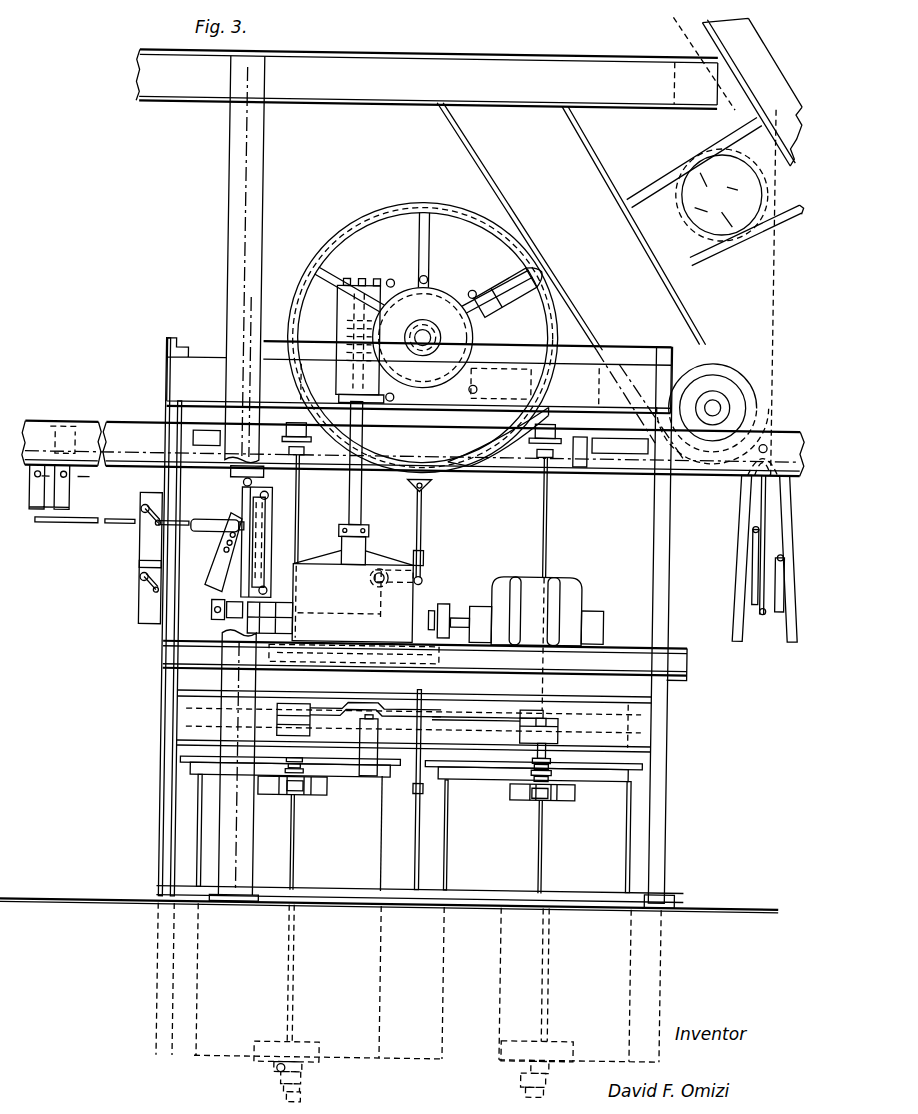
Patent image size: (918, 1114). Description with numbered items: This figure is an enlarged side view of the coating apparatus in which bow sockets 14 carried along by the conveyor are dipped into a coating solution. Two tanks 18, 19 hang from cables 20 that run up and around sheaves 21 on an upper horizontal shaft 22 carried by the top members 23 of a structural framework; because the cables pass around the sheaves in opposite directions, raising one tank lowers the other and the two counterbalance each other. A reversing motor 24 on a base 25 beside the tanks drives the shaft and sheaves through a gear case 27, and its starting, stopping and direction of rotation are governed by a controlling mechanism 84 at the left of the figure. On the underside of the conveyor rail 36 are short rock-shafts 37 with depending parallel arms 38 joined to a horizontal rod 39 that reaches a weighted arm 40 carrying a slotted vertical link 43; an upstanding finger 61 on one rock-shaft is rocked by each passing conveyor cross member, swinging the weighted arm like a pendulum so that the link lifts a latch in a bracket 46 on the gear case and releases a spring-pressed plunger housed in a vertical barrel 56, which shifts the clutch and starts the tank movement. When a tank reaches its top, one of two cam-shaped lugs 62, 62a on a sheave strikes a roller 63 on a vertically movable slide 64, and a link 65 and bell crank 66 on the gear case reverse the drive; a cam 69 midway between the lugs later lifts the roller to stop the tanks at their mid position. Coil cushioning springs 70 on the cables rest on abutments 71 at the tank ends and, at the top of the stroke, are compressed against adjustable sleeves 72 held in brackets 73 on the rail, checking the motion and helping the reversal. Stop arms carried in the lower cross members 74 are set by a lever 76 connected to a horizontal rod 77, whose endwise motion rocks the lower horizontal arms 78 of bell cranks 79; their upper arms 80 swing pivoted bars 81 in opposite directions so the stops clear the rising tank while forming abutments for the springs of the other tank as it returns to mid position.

The bow sockets 14 is at (782, 573).
The tank 18 is at (204, 830).
The tank 19 is at (636, 822).
The cables 20 is at (303, 860).
The sheaves 21 is at (376, 229).
The upper horizontal shaft 22 is at (430, 322).
The top members 23 is at (194, 361).
The motor 24 is at (572, 588).
The base 25 is at (626, 650).
The gear case 27 is at (417, 600).
The rail 36 is at (96, 424).
The rock-shafts 37 is at (68, 485).
The parallel arms 38 is at (81, 526).
The horizontal rod 39 is at (128, 529).
The weighted arm 40 is at (234, 511).
The vertical link 43 is at (264, 515).
The bracket 46 is at (294, 590).
The vertical barrel 56 is at (263, 533).
The upstanding finger 61 is at (61, 446).
The cam-shaped lug 62 is at (503, 294).
The cam-shaped lug 62a is at (332, 297).
The roller 63 is at (466, 470).
The slide 64 is at (428, 488).
The link 65 is at (418, 526).
The bell crank 66 is at (380, 588).
The cam 69 is at (493, 477).
The coil cushioning springs 70 is at (305, 765).
The abutments 71 is at (547, 793).
The adjustable sleeves 72 is at (303, 470).
The brackets 73 is at (548, 430).
The lower cross members 74 is at (413, 736).
The shaft 76 is at (436, 835).
The horizontal rod 77 is at (435, 782).
The lower horizontal arms 78 is at (405, 777).
The bell cranks 79 is at (371, 747).
The upper arms 80 is at (364, 725).
The bars 81 is at (484, 712).
The controlling mechanism 84 is at (146, 553).